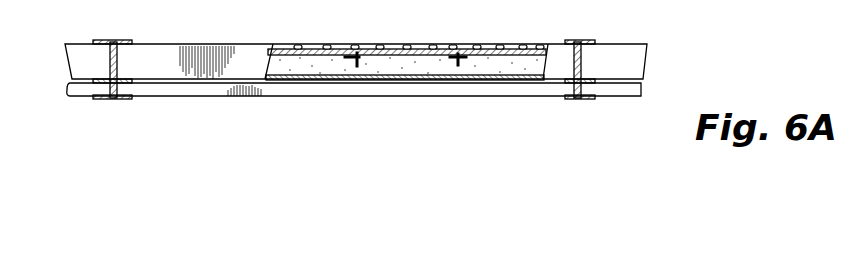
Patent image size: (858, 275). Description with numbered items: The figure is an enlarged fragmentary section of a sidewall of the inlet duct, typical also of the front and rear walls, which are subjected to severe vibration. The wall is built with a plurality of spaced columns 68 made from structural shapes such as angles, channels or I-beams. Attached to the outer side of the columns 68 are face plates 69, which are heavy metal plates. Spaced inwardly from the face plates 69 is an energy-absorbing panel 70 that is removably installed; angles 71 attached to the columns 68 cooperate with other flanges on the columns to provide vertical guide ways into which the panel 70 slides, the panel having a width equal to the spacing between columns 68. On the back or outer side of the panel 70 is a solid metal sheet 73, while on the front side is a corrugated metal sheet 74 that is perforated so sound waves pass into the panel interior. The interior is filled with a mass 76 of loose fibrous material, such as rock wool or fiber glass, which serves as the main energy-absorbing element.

The column 68 is at (115, 41).
The face plate 69 is at (475, 88).
The energy-absorbing panel 70 is at (406, 68).
The angle 71 is at (126, 83).
The solid metal sheet 73 is at (296, 80).
The corrugated metal sheet 74 is at (444, 45).
The mass of loose fibrous material 76 is at (347, 58).